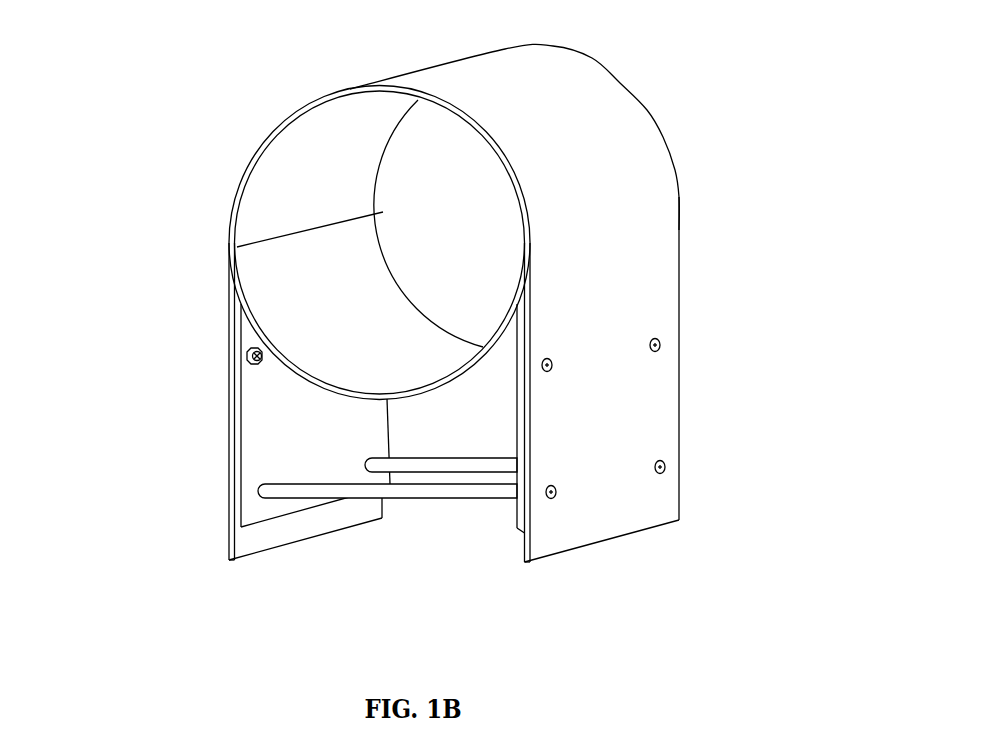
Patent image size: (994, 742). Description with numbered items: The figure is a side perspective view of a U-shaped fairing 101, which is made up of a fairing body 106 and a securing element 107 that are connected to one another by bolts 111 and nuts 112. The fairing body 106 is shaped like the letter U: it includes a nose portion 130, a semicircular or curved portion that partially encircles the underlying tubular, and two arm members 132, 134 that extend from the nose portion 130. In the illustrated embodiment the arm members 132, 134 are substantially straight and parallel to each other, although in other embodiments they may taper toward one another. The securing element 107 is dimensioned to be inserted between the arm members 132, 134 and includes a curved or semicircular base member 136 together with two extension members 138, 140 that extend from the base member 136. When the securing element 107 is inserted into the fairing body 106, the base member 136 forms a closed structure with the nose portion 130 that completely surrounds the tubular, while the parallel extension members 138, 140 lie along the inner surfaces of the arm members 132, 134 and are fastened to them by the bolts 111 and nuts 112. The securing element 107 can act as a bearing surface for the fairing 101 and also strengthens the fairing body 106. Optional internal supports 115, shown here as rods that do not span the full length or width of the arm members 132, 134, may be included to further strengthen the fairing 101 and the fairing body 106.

The fairing 101 is at (270, 127).
The nose portion 130 is at (592, 58).
The fairing body 106 is at (662, 195).
The securing element 107 is at (398, 325).
The bolts 111 is at (560, 487).
The nuts 112 is at (242, 366).
The base member 136 is at (290, 358).
The internal supports 115 is at (364, 466).
The extension member 138 is at (521, 507).
The extension member 140 is at (236, 428).
The arm member 134 is at (226, 506).
The arm member 132 is at (625, 520).